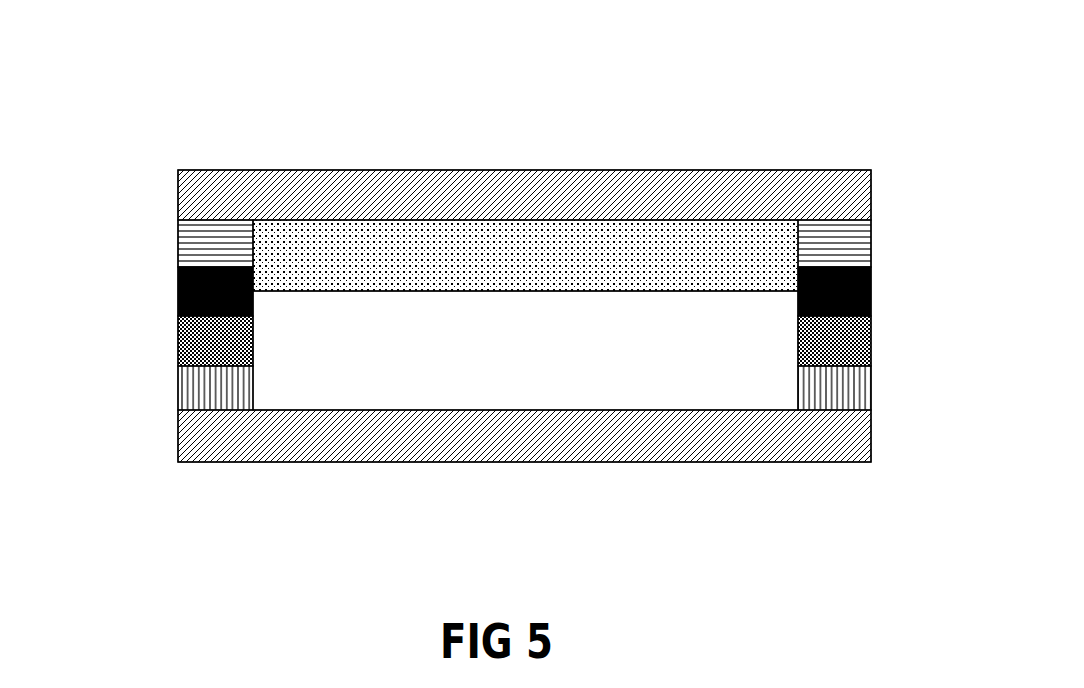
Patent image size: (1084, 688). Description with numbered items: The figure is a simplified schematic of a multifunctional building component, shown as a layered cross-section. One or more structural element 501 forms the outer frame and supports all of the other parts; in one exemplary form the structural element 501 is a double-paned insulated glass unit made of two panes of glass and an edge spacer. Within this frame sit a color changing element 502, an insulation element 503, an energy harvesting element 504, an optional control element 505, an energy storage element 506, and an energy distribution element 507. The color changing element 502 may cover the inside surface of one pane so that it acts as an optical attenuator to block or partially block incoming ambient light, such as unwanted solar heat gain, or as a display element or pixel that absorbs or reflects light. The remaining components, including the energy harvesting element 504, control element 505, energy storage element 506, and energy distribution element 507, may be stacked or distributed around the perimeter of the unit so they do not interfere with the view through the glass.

The structural element 501 is at (184, 436).
The color changing element 502 is at (355, 238).
The insulation element 503 is at (454, 293).
The energy harvesting element 504 is at (823, 236).
The control element 505 is at (266, 303).
The energy storage element 506 is at (786, 364).
The energy distribution element 507 is at (813, 404).